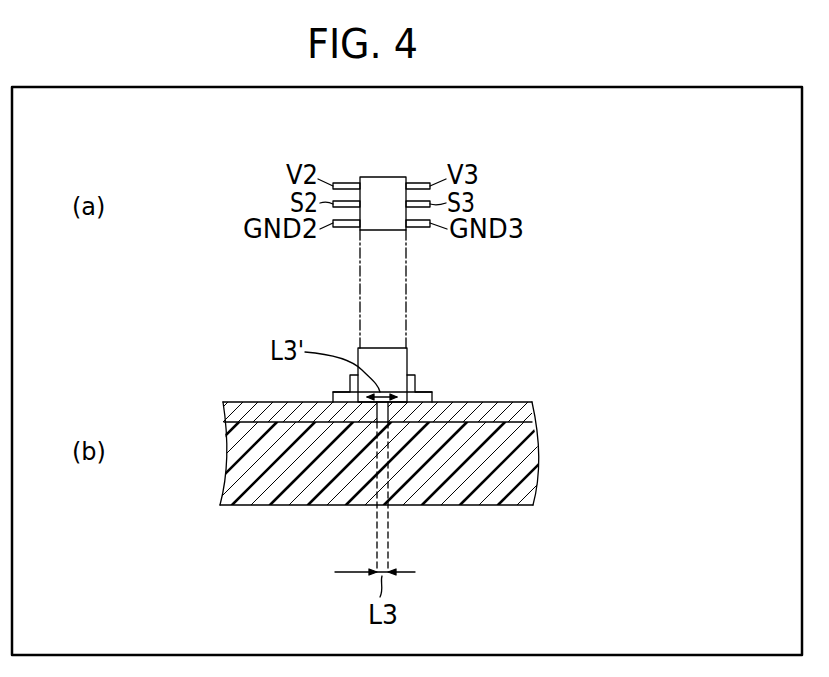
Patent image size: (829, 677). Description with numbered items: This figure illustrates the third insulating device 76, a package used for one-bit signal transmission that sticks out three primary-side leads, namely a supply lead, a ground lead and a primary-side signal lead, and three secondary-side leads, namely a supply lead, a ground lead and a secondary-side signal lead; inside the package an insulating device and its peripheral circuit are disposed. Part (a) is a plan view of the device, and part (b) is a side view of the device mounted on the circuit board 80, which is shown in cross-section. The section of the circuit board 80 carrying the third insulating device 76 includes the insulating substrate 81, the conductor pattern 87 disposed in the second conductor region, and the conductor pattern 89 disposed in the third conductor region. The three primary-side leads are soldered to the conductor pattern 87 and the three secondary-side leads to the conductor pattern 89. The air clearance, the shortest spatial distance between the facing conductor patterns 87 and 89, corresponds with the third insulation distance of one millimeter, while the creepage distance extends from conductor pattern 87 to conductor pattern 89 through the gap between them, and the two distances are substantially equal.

The third insulating device 76 is at (463, 153).
The circuit board 80 is at (596, 400).
The insulating substrate 81 is at (522, 485).
The conductor pattern 87 is at (223, 412).
The conductor pattern 89 is at (523, 413).